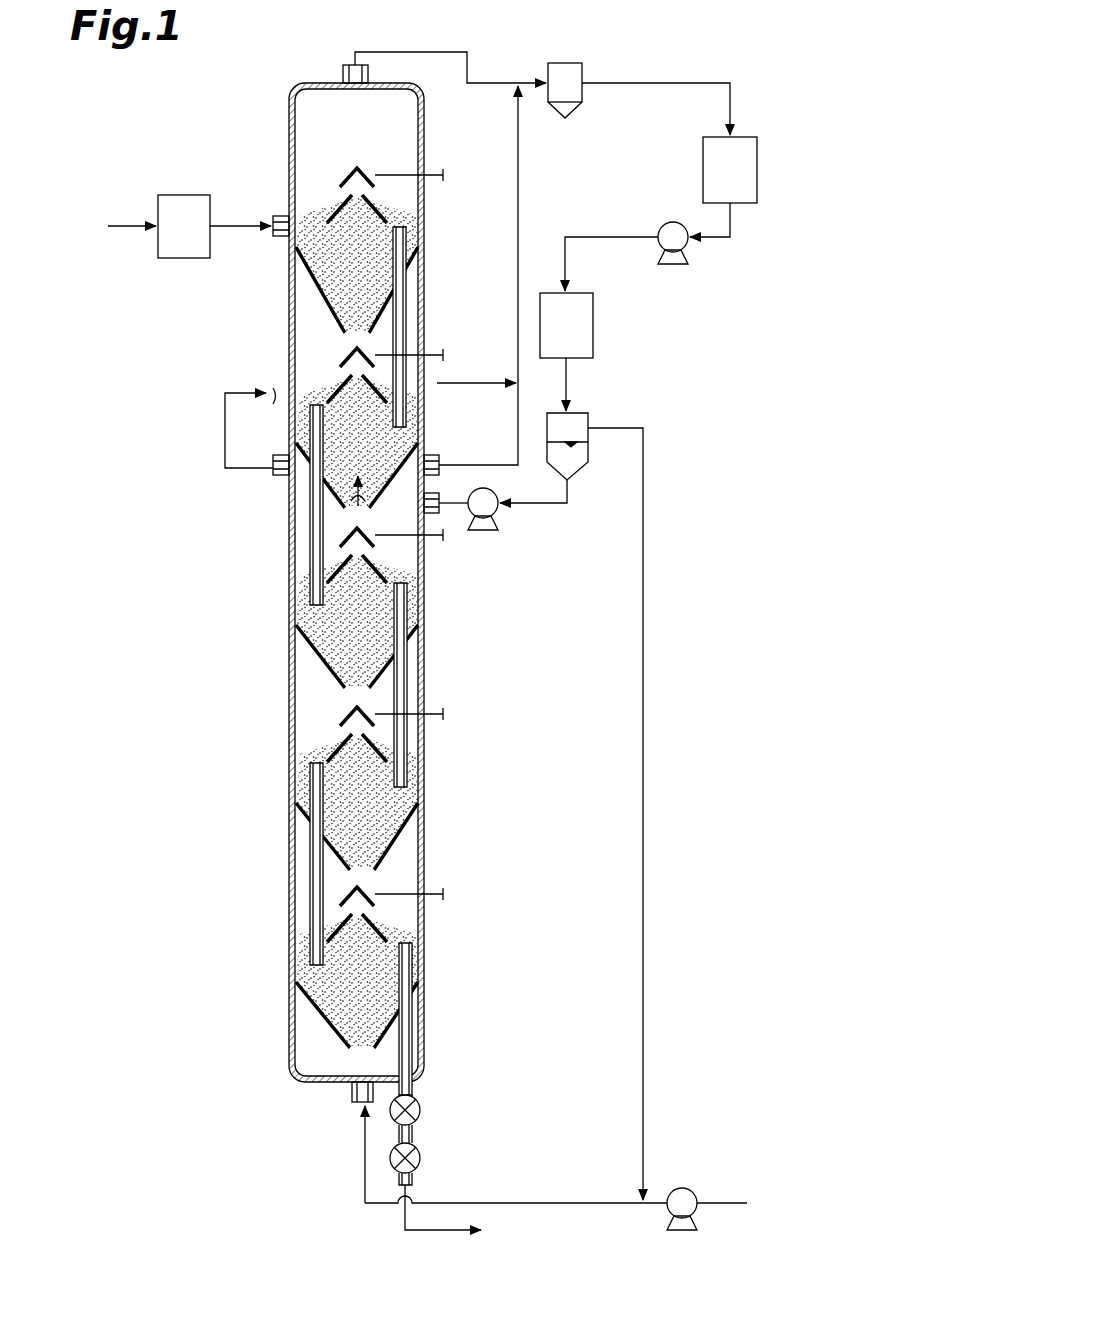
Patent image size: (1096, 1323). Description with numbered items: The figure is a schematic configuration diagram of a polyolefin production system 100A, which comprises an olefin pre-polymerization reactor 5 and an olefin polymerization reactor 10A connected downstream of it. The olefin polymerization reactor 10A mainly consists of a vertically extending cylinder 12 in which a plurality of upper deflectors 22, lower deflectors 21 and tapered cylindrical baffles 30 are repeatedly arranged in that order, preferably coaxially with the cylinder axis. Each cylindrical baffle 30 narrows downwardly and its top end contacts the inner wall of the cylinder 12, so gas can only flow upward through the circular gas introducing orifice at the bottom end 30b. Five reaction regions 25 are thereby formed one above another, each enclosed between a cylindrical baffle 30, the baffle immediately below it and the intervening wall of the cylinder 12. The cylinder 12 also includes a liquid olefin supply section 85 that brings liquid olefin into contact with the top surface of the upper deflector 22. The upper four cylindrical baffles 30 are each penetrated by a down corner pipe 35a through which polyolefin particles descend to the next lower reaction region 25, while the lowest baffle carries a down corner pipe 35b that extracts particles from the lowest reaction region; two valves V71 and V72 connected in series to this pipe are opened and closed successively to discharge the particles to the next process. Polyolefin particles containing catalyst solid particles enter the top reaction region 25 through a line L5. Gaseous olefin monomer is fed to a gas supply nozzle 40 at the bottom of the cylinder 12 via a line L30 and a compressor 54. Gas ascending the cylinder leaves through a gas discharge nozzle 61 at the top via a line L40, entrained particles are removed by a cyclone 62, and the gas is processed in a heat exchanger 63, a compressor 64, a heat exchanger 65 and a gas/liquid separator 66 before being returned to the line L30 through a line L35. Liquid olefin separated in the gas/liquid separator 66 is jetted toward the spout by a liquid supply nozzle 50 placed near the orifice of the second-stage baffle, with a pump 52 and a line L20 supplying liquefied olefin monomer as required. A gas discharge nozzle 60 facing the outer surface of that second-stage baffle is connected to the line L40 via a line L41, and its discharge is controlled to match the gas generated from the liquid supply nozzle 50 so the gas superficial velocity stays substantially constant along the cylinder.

The polyolefin production system 100A is at (501, 624).
The olefin polymerization reactor 10A is at (335, 579).
The cylinder 12 is at (291, 128).
The olefin pre-polymerization reactor 5 is at (190, 194).
The line L5 is at (238, 230).
The lower deflector 21 is at (332, 212).
The upper deflector 22 is at (345, 175).
The reaction region 25 is at (396, 238).
The cylindrical baffle 30 is at (410, 285).
The bottom end 30b is at (343, 333).
The down corner pipe 35a is at (407, 323).
The down corner pipe 35b is at (408, 1036).
The gas supply nozzle 40 is at (352, 1092).
The liquid supply nozzle 50 is at (362, 506).
The pump 52 is at (490, 532).
The compressor 54 is at (680, 1187).
The gas discharge nozzle 60 is at (283, 458).
The gas discharge nozzle 61 is at (368, 74).
The cyclone 62 is at (584, 72).
The heat exchanger 63 is at (759, 165).
The compressor 64 is at (673, 222).
The heat exchanger 65 is at (595, 321).
The gas/liquid separator 66 is at (589, 413).
The liquid olefin supply section 85 is at (445, 178).
The line L20 is at (447, 497).
The line L30 is at (563, 1202).
The line L35 is at (645, 790).
The line L40 is at (470, 88).
The line L41 is at (225, 432).
The valve V71 is at (421, 1110).
The valve V72 is at (421, 1158).